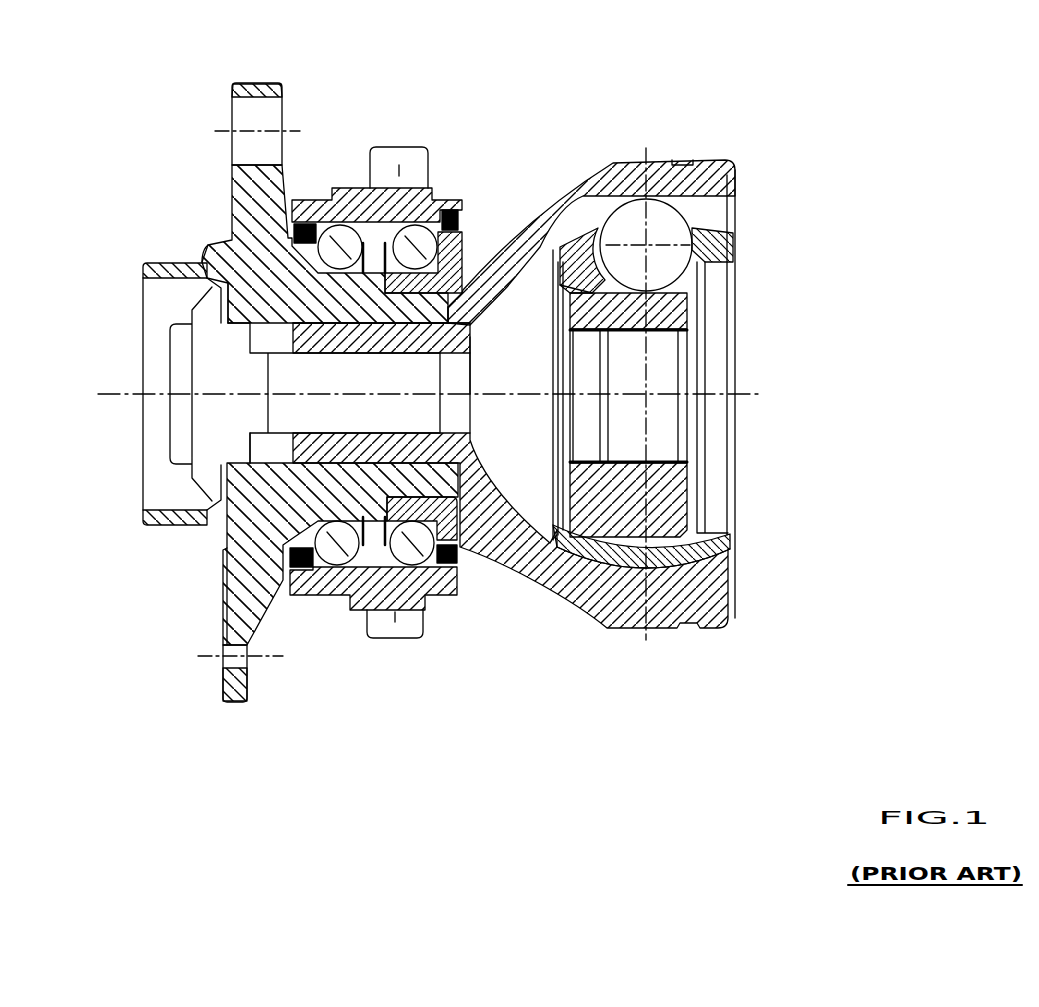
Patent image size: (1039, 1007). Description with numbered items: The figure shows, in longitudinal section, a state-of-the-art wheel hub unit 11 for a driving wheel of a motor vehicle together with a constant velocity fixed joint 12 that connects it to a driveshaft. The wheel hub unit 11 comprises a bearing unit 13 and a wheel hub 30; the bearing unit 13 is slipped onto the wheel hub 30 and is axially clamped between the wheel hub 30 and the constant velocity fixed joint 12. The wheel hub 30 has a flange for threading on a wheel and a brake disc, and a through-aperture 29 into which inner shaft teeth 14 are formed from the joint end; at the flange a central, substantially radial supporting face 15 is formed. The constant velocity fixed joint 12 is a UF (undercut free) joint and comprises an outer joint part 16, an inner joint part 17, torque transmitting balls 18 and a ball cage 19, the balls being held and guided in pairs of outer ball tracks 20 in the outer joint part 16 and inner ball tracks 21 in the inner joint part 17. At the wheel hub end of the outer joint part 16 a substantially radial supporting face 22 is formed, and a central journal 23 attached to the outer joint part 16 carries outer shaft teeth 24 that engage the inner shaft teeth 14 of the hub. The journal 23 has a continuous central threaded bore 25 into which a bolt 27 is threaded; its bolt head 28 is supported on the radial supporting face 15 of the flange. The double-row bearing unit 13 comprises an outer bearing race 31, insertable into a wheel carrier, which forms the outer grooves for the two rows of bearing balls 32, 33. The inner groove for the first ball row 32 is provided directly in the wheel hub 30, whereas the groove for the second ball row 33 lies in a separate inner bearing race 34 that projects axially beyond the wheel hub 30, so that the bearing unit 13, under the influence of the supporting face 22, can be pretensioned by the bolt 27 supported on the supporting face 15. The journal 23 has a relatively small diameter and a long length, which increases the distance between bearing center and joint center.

The wheel hub unit 11 is at (318, 122).
The constant velocity fixed joint 12 is at (636, 112).
The bearing unit 13 is at (391, 346).
The inner shaft teeth 14 is at (300, 352).
The radial supporting face 15 is at (206, 268).
The outer joint part 16 is at (697, 172).
The inner joint part 17 is at (680, 320).
The torque transmitting balls 18 is at (672, 237).
The ball cage 19 is at (720, 246).
The outer ball tracks 20 is at (562, 262).
The inner ball tracks 21 is at (583, 280).
The radial supporting face 22 is at (468, 262).
The central journal 23 is at (425, 343).
The outer shaft teeth 24 is at (435, 340).
The central threaded bore 25 is at (440, 355).
The bolt 27 is at (312, 432).
The bolt head 28 is at (210, 462).
The through-aperture 29 is at (235, 333).
The wheel hub 30 is at (245, 200).
The outer bearing race 31 is at (372, 200).
The bearing ball row 32 is at (340, 232).
The bearing ball row 33 is at (425, 232).
The inner bearing race 34 is at (447, 232).